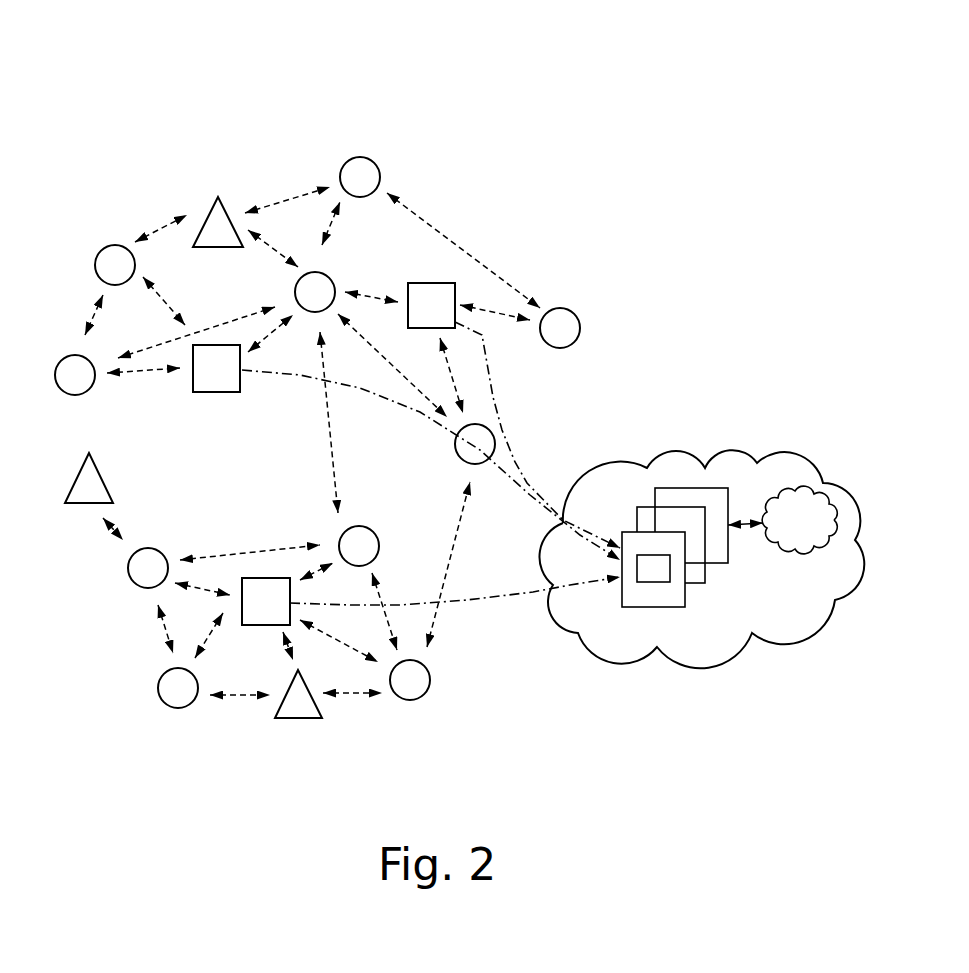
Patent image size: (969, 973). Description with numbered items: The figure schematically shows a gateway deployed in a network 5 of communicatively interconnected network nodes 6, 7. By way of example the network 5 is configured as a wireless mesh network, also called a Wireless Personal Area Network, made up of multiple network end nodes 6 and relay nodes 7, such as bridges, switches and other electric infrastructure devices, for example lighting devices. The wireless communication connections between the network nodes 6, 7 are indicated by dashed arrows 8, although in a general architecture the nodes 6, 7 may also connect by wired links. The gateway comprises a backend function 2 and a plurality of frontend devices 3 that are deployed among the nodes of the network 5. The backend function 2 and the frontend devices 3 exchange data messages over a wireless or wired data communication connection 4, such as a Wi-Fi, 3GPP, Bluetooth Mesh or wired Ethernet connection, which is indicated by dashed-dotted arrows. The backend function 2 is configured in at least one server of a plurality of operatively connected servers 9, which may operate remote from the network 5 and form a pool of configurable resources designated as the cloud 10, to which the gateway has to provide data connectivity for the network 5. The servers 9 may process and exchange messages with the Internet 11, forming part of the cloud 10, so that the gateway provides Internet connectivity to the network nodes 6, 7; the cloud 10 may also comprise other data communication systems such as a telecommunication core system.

The backend function 2 is at (658, 577).
The frontend devices 3 is at (420, 292).
The data communication connection 4 is at (431, 513).
The network 5 is at (594, 134).
The network end nodes 6 is at (343, 182).
The relay nodes 7 is at (218, 198).
The dashed arrows 8 is at (312, 466).
The servers 9 is at (706, 599).
The cloud 10 is at (683, 465).
The Internet 11 is at (815, 512).